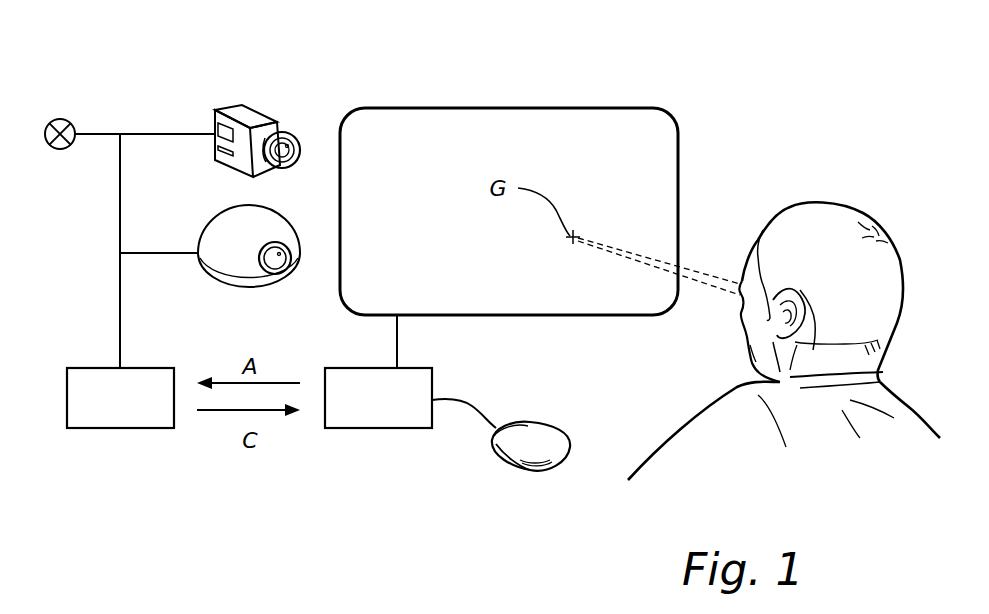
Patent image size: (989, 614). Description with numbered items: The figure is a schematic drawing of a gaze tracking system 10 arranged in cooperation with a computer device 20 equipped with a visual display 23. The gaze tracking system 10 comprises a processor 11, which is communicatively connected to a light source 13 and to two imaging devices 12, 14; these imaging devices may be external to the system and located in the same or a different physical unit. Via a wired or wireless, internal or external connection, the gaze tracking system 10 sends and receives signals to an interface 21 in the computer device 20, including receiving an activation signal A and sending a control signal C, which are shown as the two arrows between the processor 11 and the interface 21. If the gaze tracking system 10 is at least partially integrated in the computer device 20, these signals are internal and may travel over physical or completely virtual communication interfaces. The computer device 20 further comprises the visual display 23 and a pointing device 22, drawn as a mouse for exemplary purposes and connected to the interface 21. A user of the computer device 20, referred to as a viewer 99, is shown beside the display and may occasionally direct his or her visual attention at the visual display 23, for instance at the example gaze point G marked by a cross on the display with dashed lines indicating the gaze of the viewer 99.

The gaze tracking system 10 is at (128, 453).
The processor 11 is at (155, 428).
The imaging device 12 is at (253, 108).
The light source 13 is at (62, 120).
The imaging device 14 is at (213, 273).
The computer device 20 is at (485, 500).
The interface 21 is at (380, 428).
The pointing device 22 is at (542, 438).
The visual display 23 is at (593, 108).
The viewer 99 is at (823, 217).